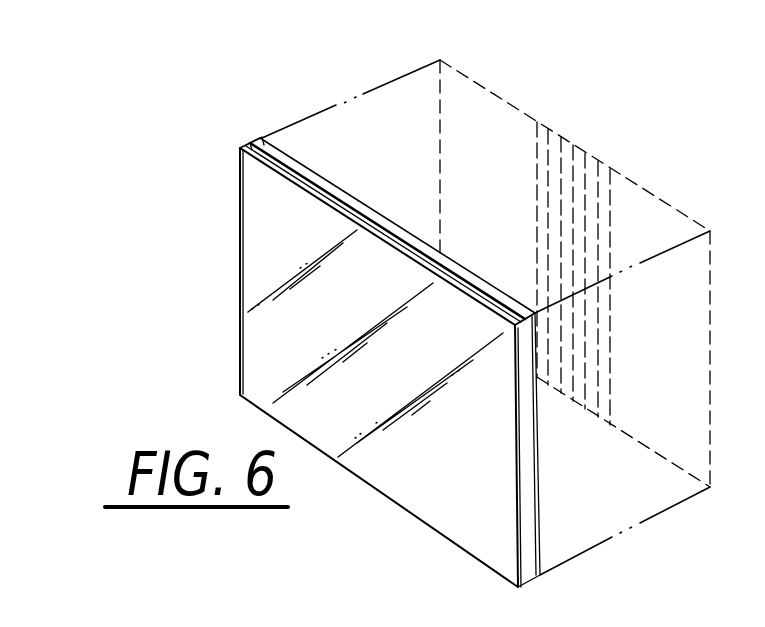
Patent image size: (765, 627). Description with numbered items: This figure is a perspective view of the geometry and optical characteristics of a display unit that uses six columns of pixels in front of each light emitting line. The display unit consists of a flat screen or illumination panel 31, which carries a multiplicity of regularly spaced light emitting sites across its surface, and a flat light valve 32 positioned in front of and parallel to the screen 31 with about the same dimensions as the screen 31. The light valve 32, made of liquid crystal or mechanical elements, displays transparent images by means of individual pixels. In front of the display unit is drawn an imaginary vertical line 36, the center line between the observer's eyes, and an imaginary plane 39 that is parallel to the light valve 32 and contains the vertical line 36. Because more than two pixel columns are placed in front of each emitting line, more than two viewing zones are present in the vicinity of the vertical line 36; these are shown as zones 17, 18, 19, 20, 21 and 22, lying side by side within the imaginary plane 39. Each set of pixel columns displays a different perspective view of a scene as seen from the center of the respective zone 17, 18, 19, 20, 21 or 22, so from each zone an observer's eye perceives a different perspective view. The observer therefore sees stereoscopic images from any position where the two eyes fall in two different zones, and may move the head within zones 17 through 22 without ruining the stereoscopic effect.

The zone 17 is at (538, 122).
The zone 18 is at (553, 128).
The zone 19 is at (567, 135).
The vertical line 36 is at (581, 152).
The zone 20 is at (582, 156).
The zone 21 is at (594, 161).
The zone 22 is at (608, 168).
The screen 31 is at (238, 203).
The light valve 32 is at (268, 140).
The imaginary plane 39 is at (682, 224).